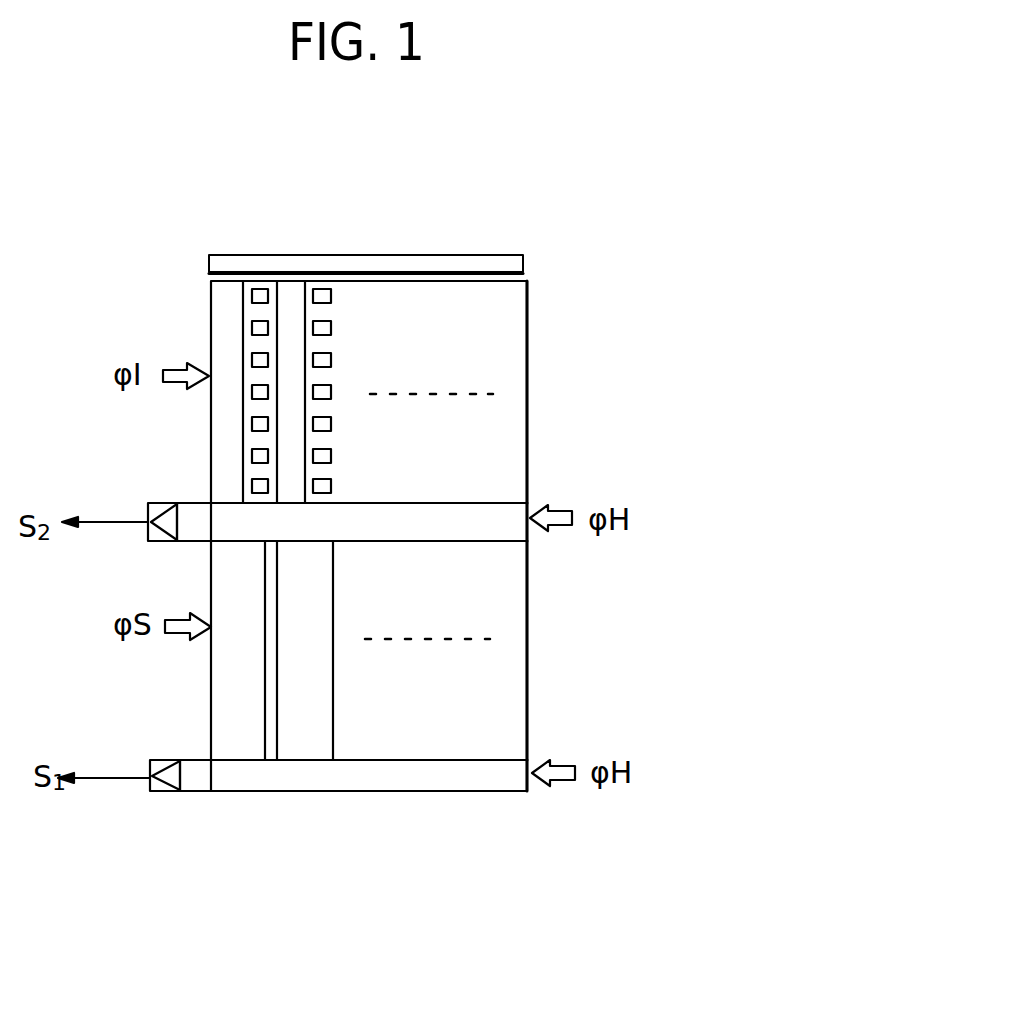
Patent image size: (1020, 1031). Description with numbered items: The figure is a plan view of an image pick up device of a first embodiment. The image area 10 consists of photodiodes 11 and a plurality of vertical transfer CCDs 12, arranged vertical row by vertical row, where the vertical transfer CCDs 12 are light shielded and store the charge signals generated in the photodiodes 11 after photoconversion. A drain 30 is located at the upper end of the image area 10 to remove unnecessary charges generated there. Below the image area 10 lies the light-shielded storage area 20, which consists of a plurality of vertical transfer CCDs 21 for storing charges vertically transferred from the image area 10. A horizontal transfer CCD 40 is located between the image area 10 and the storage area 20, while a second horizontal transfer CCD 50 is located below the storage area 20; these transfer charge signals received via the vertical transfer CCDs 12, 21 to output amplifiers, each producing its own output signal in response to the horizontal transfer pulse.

The image area 10 is at (527, 375).
The photodiode 11 is at (257, 290).
The vertical transfer CCD 12 is at (236, 298).
The storage area 20 is at (529, 680).
The vertical transfer CCD 21 is at (238, 750).
The drain 30 is at (523, 258).
The horizontal transfer CCD 40 is at (483, 510).
The horizontal transfer CCD 50 is at (493, 777).